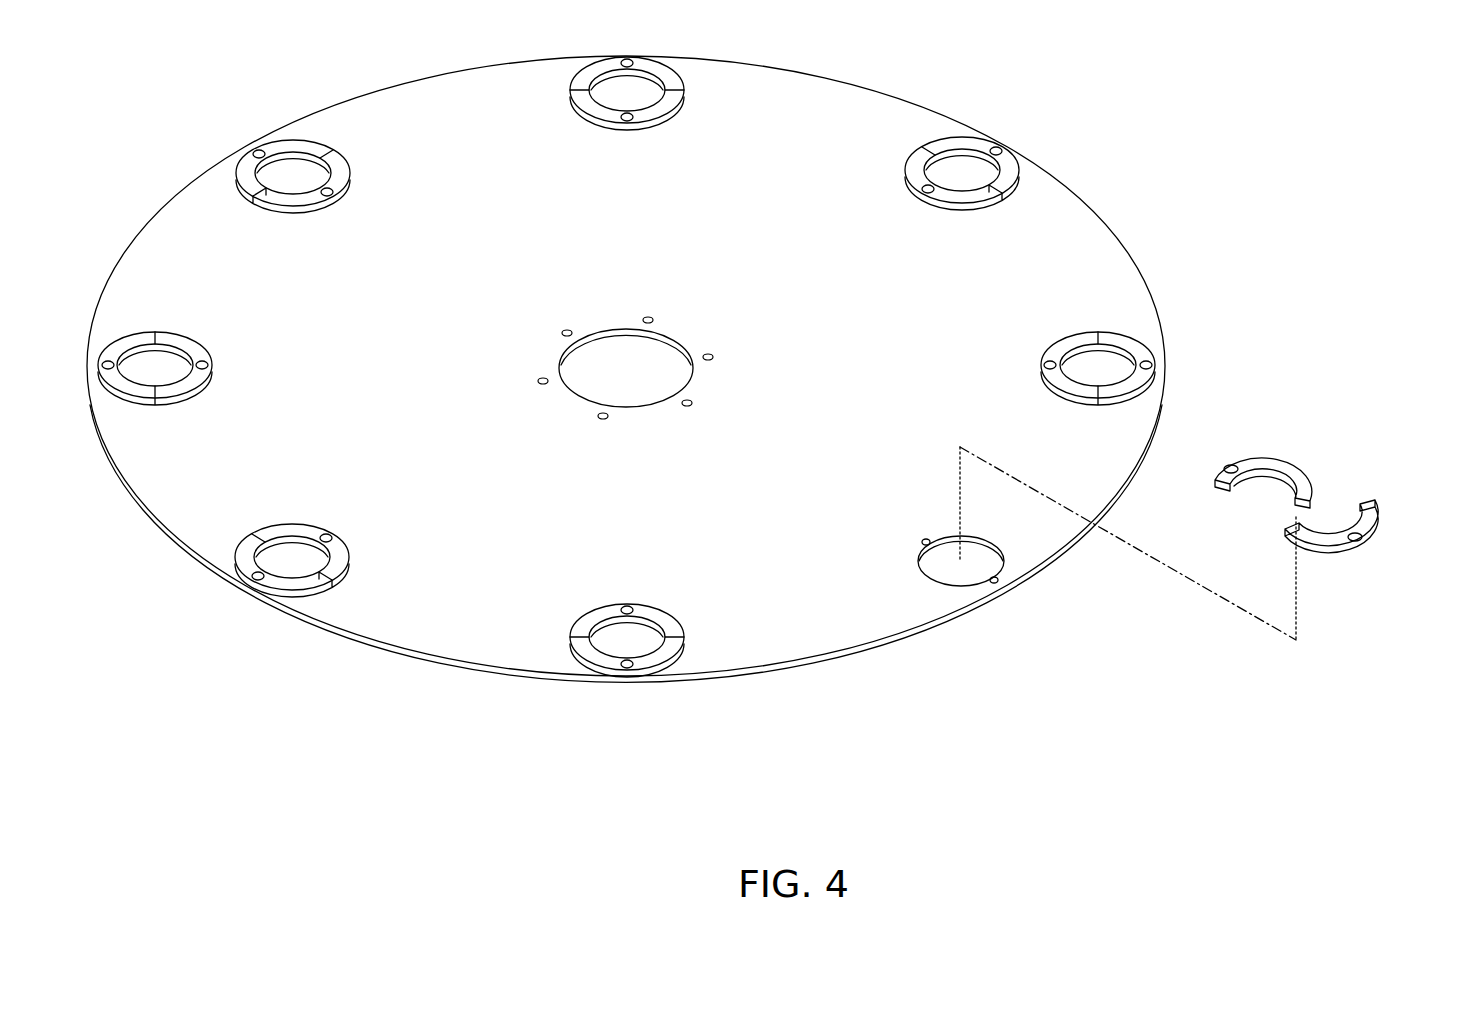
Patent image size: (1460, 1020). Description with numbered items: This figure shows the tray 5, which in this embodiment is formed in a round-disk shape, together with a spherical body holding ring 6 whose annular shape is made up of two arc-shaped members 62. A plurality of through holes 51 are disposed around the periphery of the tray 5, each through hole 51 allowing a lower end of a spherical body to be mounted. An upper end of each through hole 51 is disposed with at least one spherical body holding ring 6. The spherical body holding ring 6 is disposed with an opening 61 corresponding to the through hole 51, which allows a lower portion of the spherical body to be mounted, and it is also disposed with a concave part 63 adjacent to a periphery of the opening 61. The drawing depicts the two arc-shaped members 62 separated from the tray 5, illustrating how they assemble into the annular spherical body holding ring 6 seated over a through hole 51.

The tray 5 is at (814, 99).
The through hole 51 is at (1082, 362).
The spherical body holding ring 6 is at (1331, 472).
The opening 61 is at (1118, 350).
The arc-shaped member 62 is at (1274, 462).
The concave part 63 is at (1252, 476).